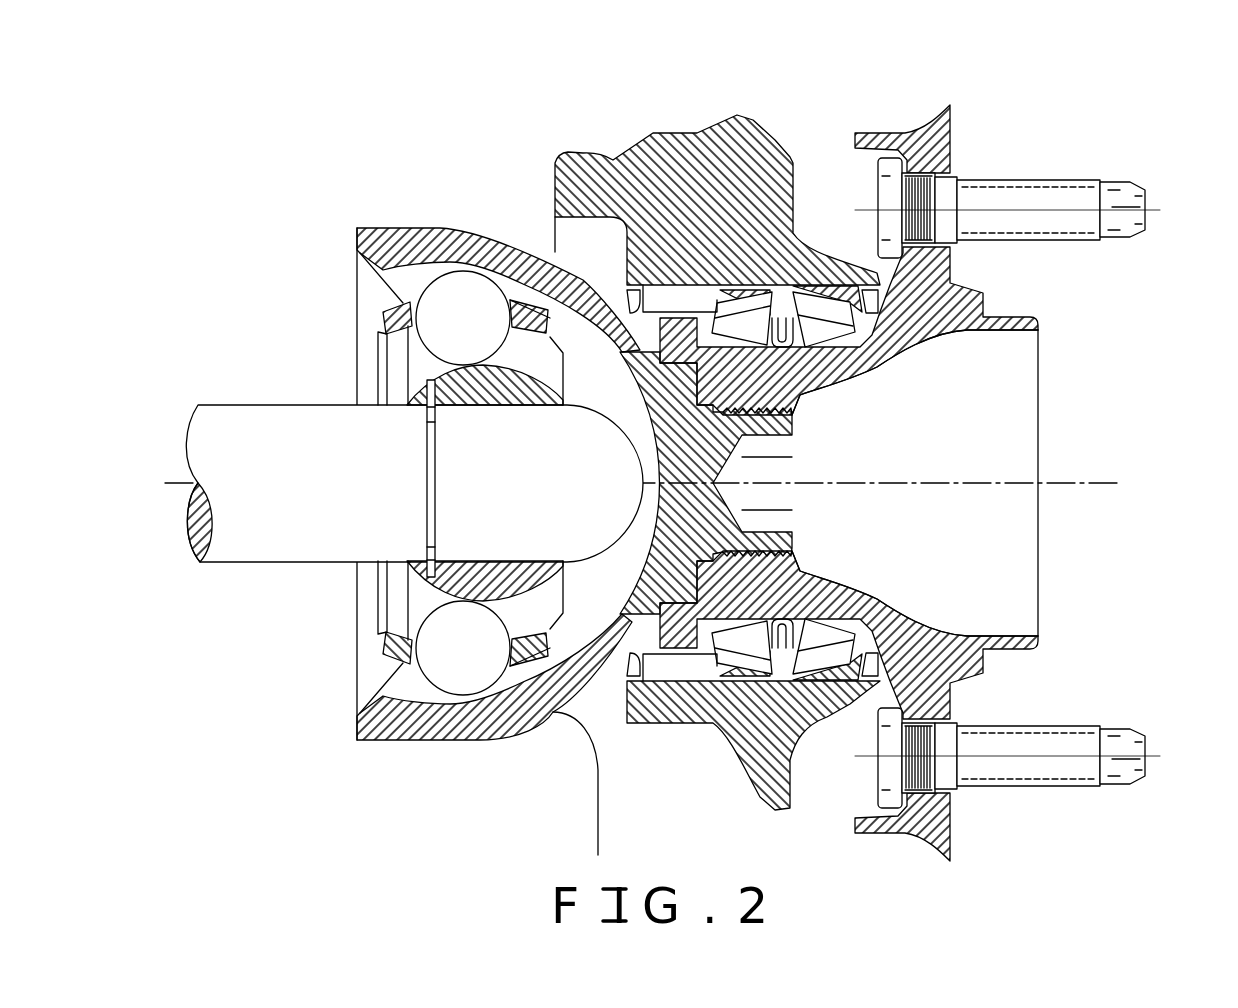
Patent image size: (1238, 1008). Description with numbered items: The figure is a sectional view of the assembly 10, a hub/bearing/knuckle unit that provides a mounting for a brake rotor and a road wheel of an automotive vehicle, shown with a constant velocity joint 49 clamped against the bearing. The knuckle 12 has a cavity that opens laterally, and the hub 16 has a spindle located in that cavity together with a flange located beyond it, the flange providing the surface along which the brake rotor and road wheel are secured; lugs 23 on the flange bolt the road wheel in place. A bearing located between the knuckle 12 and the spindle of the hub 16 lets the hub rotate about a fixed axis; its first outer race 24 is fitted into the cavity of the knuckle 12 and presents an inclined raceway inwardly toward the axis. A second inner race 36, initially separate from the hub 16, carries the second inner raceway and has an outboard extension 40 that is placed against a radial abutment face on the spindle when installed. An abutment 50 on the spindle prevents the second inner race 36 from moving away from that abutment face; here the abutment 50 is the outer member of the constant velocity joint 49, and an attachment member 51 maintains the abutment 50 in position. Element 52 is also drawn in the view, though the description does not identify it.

The assembly 10 is at (923, 452).
The knuckle 12 is at (762, 118).
The hub 16 is at (942, 98).
The lugs 23 is at (1138, 180).
The first outer race 24 is at (823, 388).
The second inner race 36 is at (722, 630).
The outboard extension 40 is at (838, 578).
The constant velocity joint 49 is at (475, 200).
The abutment 50 is at (430, 225).
The attachment member 51 is at (795, 420).
The seal 52 is at (690, 635).